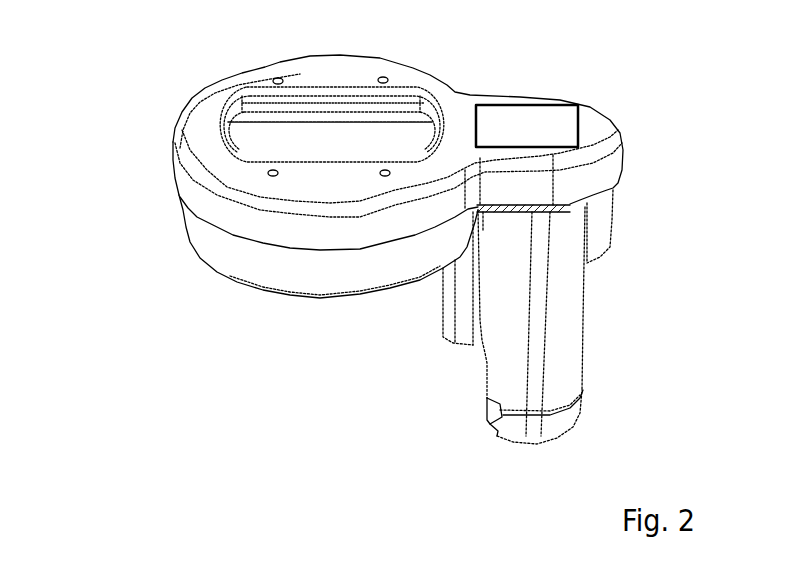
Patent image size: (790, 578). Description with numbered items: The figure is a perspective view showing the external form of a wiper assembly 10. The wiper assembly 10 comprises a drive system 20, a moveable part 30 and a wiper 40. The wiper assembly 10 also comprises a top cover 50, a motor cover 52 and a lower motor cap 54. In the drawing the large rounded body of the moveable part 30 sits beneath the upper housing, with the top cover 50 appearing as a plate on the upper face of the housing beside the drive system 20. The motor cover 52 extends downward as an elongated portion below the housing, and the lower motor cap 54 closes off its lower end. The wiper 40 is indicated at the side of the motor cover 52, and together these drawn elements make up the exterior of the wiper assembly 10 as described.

The wiper assembly 10 is at (113, 116).
The drive system 20 is at (637, 230).
The moveable part 30 is at (223, 245).
The wiper 40 is at (424, 353).
The top cover 50 is at (485, 116).
The motor cover 52 is at (560, 350).
The lower motor cap 54 is at (562, 423).